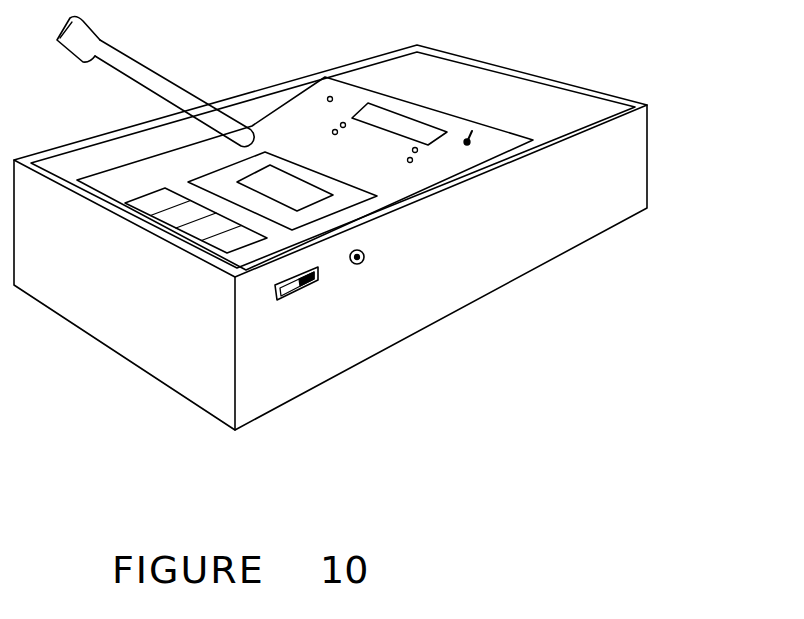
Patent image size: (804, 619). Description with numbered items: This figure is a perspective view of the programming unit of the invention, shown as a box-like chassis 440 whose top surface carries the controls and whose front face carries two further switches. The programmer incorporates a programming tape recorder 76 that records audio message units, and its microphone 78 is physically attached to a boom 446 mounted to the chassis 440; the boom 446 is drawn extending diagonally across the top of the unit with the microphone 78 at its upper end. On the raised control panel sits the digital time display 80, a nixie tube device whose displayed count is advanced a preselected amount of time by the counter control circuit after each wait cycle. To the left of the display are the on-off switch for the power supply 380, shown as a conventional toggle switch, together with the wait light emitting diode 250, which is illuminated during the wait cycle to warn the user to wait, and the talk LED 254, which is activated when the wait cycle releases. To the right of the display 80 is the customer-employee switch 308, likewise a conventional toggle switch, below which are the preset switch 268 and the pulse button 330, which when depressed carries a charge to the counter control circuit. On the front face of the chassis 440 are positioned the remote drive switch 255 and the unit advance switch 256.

The programming tape recorder 76 is at (315, 215).
The microphone 78 is at (80, 42).
The digital time display 80 is at (410, 128).
The wait light emitting diode 250 is at (343, 123).
The talk LED 254 is at (333, 132).
The remote drive switch 255 is at (307, 280).
The unit advance switch 256 is at (364, 256).
The preset switch 268 is at (418, 152).
The customer-employee switch 308 is at (477, 147).
The pulse button 330 is at (412, 163).
The on-off switch for the power supply 380 is at (330, 97).
The chassis 440 is at (502, 70).
The boom 446 is at (143, 78).